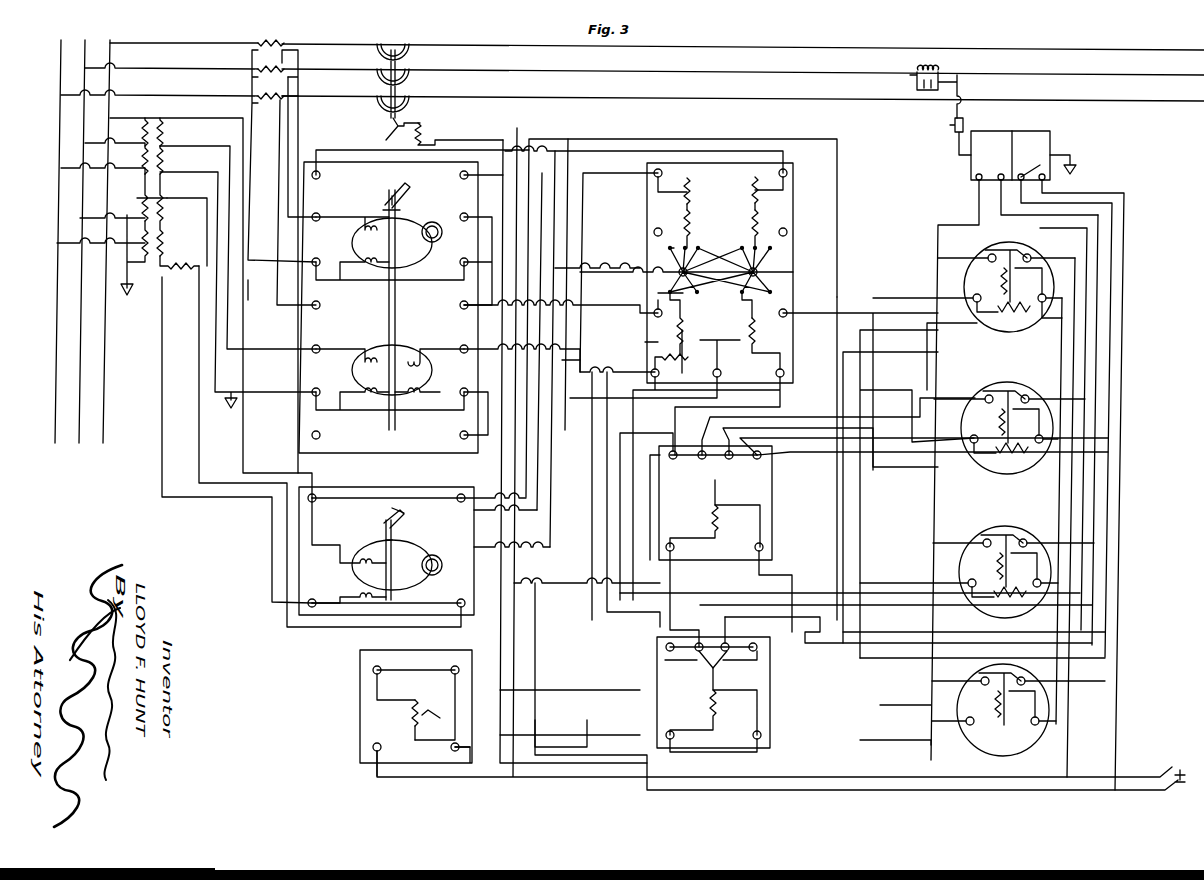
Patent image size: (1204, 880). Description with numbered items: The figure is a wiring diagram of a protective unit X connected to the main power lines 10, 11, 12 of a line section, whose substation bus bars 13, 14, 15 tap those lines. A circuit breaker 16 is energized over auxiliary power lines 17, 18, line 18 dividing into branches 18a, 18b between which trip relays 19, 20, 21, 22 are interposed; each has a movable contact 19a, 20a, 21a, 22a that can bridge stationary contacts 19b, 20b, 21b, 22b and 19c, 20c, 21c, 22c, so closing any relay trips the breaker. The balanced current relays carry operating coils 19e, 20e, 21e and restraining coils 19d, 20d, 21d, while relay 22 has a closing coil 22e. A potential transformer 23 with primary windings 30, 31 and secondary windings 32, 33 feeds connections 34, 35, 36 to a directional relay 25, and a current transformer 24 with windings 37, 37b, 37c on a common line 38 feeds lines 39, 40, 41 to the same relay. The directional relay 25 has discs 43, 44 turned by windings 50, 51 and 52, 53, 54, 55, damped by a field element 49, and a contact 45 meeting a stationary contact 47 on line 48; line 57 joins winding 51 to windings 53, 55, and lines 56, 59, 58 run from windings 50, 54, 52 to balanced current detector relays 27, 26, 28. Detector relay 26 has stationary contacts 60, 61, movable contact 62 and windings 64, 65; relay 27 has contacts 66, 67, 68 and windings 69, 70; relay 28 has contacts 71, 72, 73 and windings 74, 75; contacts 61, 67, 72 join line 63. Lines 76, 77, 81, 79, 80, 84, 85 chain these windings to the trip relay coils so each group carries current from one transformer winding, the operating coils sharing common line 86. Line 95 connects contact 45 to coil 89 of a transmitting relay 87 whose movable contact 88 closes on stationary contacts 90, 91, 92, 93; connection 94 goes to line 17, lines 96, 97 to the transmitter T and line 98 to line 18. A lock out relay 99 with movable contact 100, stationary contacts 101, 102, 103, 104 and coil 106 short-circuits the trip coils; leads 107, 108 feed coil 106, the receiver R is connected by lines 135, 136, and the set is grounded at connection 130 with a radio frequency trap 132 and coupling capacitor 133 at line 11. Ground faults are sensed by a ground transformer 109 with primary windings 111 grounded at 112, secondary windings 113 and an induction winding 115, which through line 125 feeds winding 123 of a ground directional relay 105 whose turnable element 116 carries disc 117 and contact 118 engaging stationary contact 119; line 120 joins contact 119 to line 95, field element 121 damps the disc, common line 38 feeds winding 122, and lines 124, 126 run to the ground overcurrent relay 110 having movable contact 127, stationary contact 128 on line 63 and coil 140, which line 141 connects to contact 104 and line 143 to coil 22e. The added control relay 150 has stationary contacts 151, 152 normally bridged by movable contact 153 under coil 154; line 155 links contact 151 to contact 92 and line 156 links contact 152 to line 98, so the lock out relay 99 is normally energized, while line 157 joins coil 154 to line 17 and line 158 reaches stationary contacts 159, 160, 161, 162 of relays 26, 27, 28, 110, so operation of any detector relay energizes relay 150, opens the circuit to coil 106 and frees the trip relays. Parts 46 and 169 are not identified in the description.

The main power line 10 is at (466, 48).
The main power line 11 is at (500, 76).
The main power line 12 is at (550, 102).
The bus bar 13 is at (58, 290).
The bus bar 14 is at (81, 319).
The bus bar 15 is at (105, 345).
The circuit breaker 16 is at (404, 44).
The auxiliary power line 17 is at (503, 133).
The auxiliary power line 18 is at (517, 128).
The trip relay 19 is at (984, 245).
The trip relay 20 is at (1002, 387).
The trip relay 21 is at (990, 529).
The trip relay 22 is at (978, 753).
The potential transformer 23 is at (168, 120).
The current transformer 24 is at (294, 42).
The directional relay 25 is at (353, 162).
The detector relay 26 is at (801, 166).
The detector relay 27 is at (645, 215).
The detector relay 28 is at (640, 345).
The primary winding 30 is at (149, 120).
The primary winding 31 is at (142, 156).
The secondary winding 32 is at (166, 134).
The secondary winding 33 is at (166, 158).
The connection 34 is at (222, 122).
The connection 35 is at (216, 140).
The connection 36 is at (218, 180).
The resistor 37 is at (268, 14).
The current transformer winding 37b is at (256, 69).
The current transformer winding 37c is at (256, 96).
The common line 38 is at (249, 297).
The line 39 is at (299, 110).
The line 40 is at (289, 133).
The line 41 is at (278, 157).
The disc 43 is at (392, 310).
The disc 44 is at (392, 370).
The contact 45 is at (410, 188).
The spring 46 is at (367, 144).
The stationary contact 47 is at (384, 200).
The line 48 is at (612, 272).
The fixed field element 49 is at (442, 236).
The winding 50 is at (360, 240).
The winding 51 is at (360, 270).
The winding 52 is at (360, 370).
The winding 53 is at (360, 402).
The winding 54 is at (420, 370).
The winding 55 is at (414, 400).
The line 56 is at (610, 172).
The line 57 is at (491, 292).
The line 58 is at (580, 360).
The line 59 is at (604, 242).
The stationary contact 60 is at (739, 246).
The stationary contact 61 is at (766, 248).
The movable contact 62 is at (780, 176).
The line 63 is at (720, 354).
The operating winding 64 is at (765, 203).
The restraining winding 65 is at (765, 222).
The stationary contact 66 is at (673, 248).
The stationary contact 67 is at (718, 254).
The movable contact 68 is at (695, 204).
The operating winding 69 is at (692, 196).
The restraining winding 70 is at (712, 220).
The stationary contact 71 is at (656, 293).
The stationary contact 72 is at (720, 280).
The movable contact 73 is at (684, 358).
The operating winding 74 is at (669, 354).
The restraining winding 75 is at (686, 330).
The interconnecting line 76 is at (754, 190).
The line 77 is at (884, 312).
The line 79 is at (608, 414).
The line 80 is at (893, 358).
The line 81 is at (913, 338).
The line 84 is at (920, 405).
The line 85 is at (910, 485).
The common line 86 is at (1061, 344).
The transmitting relay 87 is at (775, 681).
The movable contact 88 is at (716, 678).
The coil 89 is at (710, 708).
The stationary contact 90 is at (742, 660).
The stationary contact 91 is at (728, 636).
The stationary contact 92 is at (689, 665).
The stationary contact 93 is at (690, 623).
The connection 94 is at (676, 736).
The line 95 is at (503, 178).
The line 96 is at (888, 644).
The line 97 is at (923, 628).
The line 98 is at (640, 735).
The lock out relay 99 is at (775, 495).
The movable contact 100 is at (714, 515).
The stationary contact 101 is at (757, 465).
The stationary contact 102 is at (730, 465).
The stationary contact 103 is at (702, 465).
The stationary contact 104 is at (672, 465).
The ground directional relay 105 is at (428, 484).
The coil 106 is at (712, 512).
The lead 107 is at (720, 588).
The lead 108 is at (575, 580).
The ground transformer 109 is at (162, 275).
The ground overcurrent relay 110 is at (773, 351).
The primary windings 111 is at (147, 196).
The common ground 112 is at (142, 274).
The secondary windings 113 is at (164, 218).
The winding 115 is at (194, 264).
The turnable element 116 is at (393, 554).
The disc 117 is at (392, 560).
The contact 118 is at (402, 520).
The stationary contact 119 is at (400, 510).
The line 120 is at (540, 512).
The fixed field element 121 is at (437, 574).
The winding 122 is at (358, 562).
The winding 123 is at (358, 594).
The line 124 is at (527, 478).
The line 125 is at (161, 392).
The line 126 is at (529, 498).
The movable contact 127 is at (736, 367).
The stationary contact 128 is at (772, 292).
The ground connection 130 is at (1056, 158).
The radio frequency trap 132 is at (914, 84).
The coupling capacitor 133 is at (968, 125).
The line 135 is at (815, 540).
The line 136 is at (1104, 226).
The coil 140 is at (758, 330).
The line 141 is at (782, 407).
The line 143 is at (905, 712).
The control relay 150 is at (358, 688).
The stationary contact 151 is at (458, 664).
The stationary contact 152 is at (378, 666).
The movable contact 153 is at (412, 704).
The coil 154 is at (412, 726).
The line 155 is at (565, 668).
The line 156 is at (622, 690).
The line 157 is at (432, 781).
The line 158 is at (590, 305).
The stationary contact 159 is at (752, 248).
The stationary contact 160 is at (690, 248).
The stationary contact 161 is at (690, 304).
The stationary contact 162 is at (750, 306).
The contact 169 is at (731, 302).
The branch of auxiliary power line 18a is at (1078, 748).
The branch of auxiliary power line 18b is at (930, 740).
The movable contact 19a is at (1022, 252).
The stationary contact 19b is at (1031, 256).
The stationary contact 19c is at (990, 262).
The restraining coil 19d is at (1014, 316).
The operating coil 19e is at (1002, 282).
The movable contact 20a is at (1016, 393).
The stationary contact 20b is at (1029, 398).
The stationary contact 20c is at (988, 403).
The restraining coil 20d is at (1012, 456).
The operating coil 20e is at (1000, 424).
The movable contact 21a is at (1010, 536).
The stationary contact 21b is at (1026, 541).
The stationary contact 21c is at (986, 547).
The restraining coil 21d is at (1010, 600).
The operating coil 21e is at (998, 568).
The movable contact 22a is at (995, 694).
The stationary contact 22b is at (1024, 680).
The stationary contact 22c is at (981, 680).
The closing coil 22e is at (1006, 725).
The protective unit X is at (122, 485).